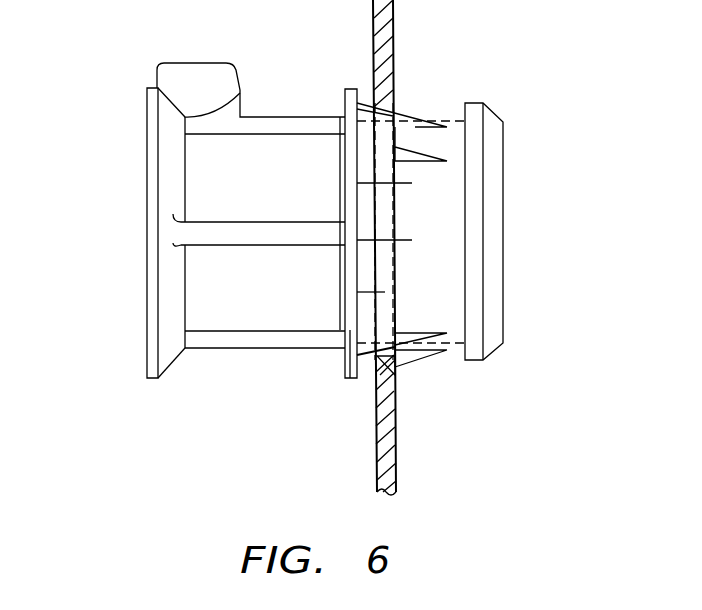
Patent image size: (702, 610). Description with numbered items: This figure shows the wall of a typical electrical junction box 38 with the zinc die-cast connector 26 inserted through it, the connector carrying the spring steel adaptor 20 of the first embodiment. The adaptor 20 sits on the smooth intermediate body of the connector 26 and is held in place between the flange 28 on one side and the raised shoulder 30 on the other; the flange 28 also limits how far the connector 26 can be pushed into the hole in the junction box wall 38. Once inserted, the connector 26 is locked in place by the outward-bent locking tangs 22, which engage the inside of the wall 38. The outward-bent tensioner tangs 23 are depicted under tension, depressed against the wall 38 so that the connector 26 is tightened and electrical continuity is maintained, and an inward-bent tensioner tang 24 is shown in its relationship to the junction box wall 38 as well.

The spring steel adaptor 20 is at (445, 305).
The outward-bent locking tangs 22 is at (420, 123).
The outward-bent tensioner tangs 23 is at (365, 102).
The inward-bent tensioner tang 24 is at (365, 292).
The zinc die-cast connector 26 is at (147, 230).
The flange 28 is at (355, 372).
The raised shoulder 30 is at (475, 350).
The wall of the junction box 38 is at (386, 432).